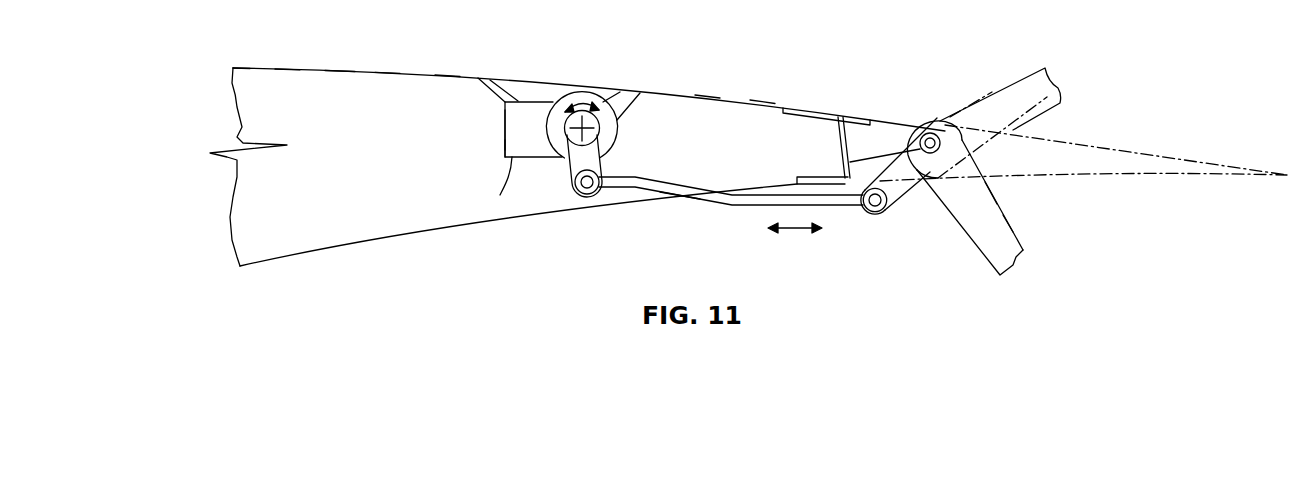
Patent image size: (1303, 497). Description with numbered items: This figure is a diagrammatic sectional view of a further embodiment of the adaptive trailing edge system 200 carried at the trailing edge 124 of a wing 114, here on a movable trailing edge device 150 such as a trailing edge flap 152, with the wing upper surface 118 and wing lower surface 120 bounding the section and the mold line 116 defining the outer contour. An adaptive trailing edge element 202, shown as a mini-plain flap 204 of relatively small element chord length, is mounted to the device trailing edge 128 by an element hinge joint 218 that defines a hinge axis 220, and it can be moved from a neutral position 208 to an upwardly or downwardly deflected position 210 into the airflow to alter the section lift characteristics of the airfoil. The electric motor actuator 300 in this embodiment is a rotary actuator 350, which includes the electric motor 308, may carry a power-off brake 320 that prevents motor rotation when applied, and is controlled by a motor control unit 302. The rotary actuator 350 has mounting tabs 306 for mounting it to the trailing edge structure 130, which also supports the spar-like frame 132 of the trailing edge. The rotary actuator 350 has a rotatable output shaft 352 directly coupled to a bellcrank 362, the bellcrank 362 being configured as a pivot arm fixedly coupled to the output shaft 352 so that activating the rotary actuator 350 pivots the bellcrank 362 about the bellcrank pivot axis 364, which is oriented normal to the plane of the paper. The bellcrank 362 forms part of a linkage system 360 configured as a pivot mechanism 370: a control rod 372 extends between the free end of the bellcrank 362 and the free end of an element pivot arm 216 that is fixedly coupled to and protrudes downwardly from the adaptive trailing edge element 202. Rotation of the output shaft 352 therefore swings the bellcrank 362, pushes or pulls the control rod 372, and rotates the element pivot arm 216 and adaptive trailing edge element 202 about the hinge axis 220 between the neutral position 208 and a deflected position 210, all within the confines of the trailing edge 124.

The wing 114 is at (236, 67).
The wing upper surface 118 is at (285, 67).
The mold line 116 is at (340, 71).
The trailing edge 124 is at (387, 73).
The trailing edge structure 130 is at (447, 76).
The mounting tabs 306 is at (486, 80).
The device trailing edge 128 is at (534, 80).
The output shaft 352 is at (579, 119).
The trailing edge device 150 is at (707, 97).
The trailing edge flap 152 is at (762, 101).
The rear spar 132 is at (838, 114).
The hinge axis 220 is at (921, 137).
The element hinge joint 218 is at (929, 132).
The deflected position 210 is at (1043, 109).
The adaptive trailing edge element 202 is at (1000, 206).
The mini-plain flap 204 is at (1012, 228).
The neutral position 208 is at (1153, 181).
The element pivot arm 216 is at (901, 195).
The control rod 372 is at (850, 208).
The linkage system 360 is at (750, 207).
The pivot mechanism 370 is at (702, 201).
The bellcrank pivot axis 364 is at (598, 186).
The bellcrank 362 is at (569, 184).
The rotary actuator 350 is at (522, 157).
The power-off brake 320 is at (512, 157).
The electric motor 308 is at (509, 167).
The motor control unit 302 is at (504, 153).
The electric motor actuator 300 is at (504, 135).
The adaptive trailing edge system 200 is at (504, 128).
The wing lower surface 120 is at (255, 270).